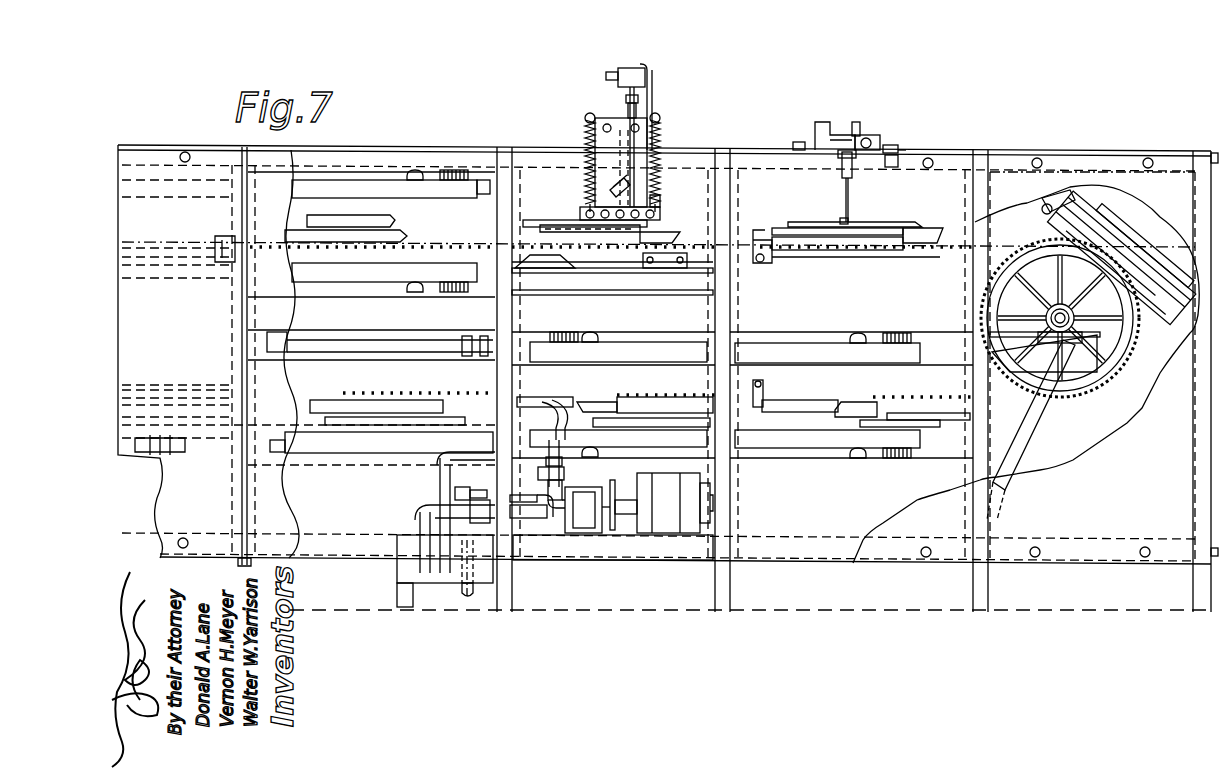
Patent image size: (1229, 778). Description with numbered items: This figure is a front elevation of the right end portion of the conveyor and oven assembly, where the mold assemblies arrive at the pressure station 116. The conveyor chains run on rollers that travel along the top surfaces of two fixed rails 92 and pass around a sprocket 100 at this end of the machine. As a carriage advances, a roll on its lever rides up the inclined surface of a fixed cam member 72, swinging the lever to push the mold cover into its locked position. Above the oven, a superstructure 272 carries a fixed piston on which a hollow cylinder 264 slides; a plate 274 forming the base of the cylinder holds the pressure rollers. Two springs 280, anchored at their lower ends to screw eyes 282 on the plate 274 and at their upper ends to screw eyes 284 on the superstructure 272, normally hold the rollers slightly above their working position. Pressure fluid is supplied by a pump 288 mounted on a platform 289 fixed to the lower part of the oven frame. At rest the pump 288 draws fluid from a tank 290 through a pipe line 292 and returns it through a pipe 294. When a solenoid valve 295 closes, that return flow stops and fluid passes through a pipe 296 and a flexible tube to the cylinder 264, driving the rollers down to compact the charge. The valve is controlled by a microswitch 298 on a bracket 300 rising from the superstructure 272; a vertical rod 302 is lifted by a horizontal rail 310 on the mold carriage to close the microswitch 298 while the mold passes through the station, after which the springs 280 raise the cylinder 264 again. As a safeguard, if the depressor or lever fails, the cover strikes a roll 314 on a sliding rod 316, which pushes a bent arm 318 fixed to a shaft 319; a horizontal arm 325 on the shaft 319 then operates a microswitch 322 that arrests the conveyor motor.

The fixed cam member 72 is at (543, 258).
The fixed rails 92 is at (867, 260).
The sprocket 100 is at (1162, 398).
The pressure station 116 is at (606, 142).
The hollow cylinder 264 is at (637, 182).
The superstructure 272 is at (597, 120).
The plate 274 is at (587, 207).
The springs 280 is at (583, 147).
The screw eyes 282 is at (657, 197).
The screw eyes 284 is at (590, 123).
The pump 288 is at (565, 487).
The platform 289 is at (643, 560).
The tank 290 is at (438, 580).
The pipe line 292 is at (527, 518).
The pipe 294 is at (437, 505).
The solenoid valve 295 is at (447, 480).
The pipe 296 is at (560, 487).
The microswitch 298 is at (632, 78).
The bracket 300 is at (653, 100).
The vertical rod 302 is at (628, 115).
The horizontal rail 310 is at (583, 217).
The roll 314 is at (850, 222).
The sliding rod 316 is at (847, 197).
The bent arm 318 is at (858, 130).
The shaft 319 is at (875, 138).
The microswitch 322 is at (892, 167).
The horizontal arm 325 is at (892, 148).